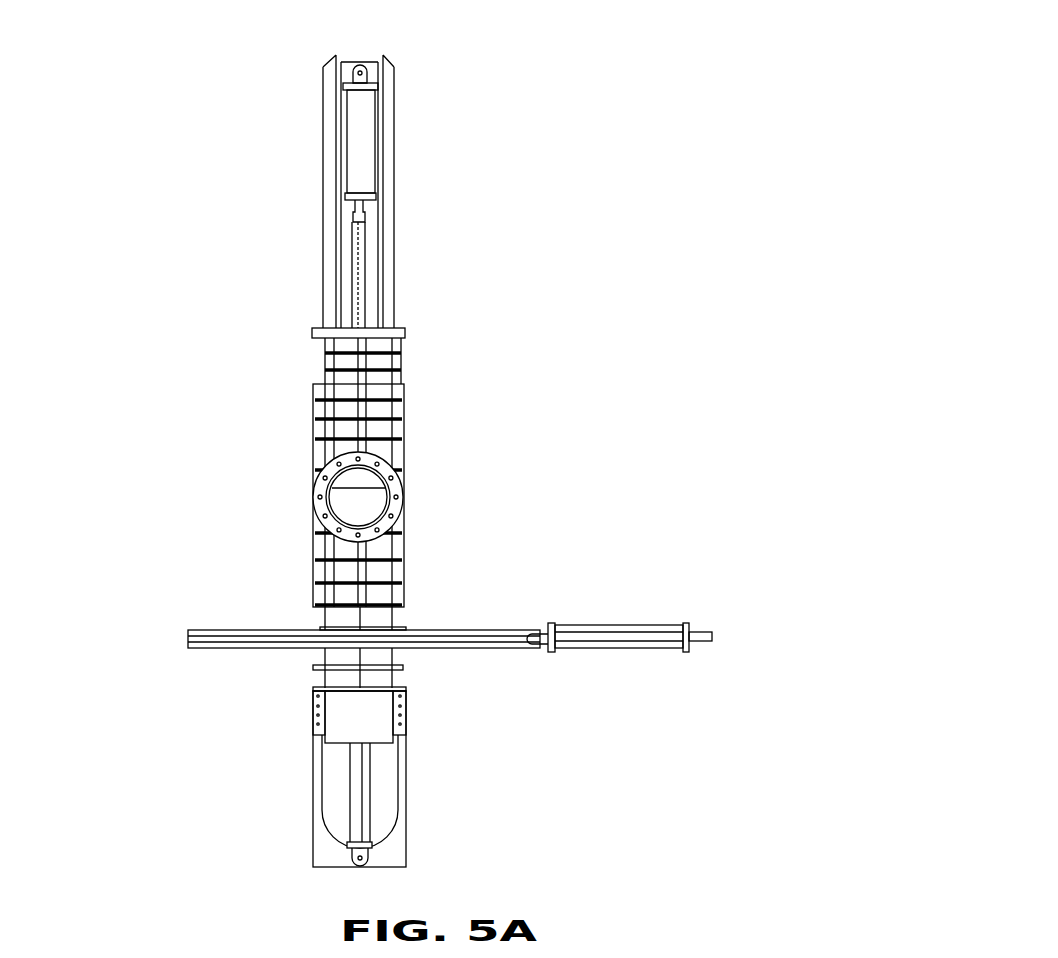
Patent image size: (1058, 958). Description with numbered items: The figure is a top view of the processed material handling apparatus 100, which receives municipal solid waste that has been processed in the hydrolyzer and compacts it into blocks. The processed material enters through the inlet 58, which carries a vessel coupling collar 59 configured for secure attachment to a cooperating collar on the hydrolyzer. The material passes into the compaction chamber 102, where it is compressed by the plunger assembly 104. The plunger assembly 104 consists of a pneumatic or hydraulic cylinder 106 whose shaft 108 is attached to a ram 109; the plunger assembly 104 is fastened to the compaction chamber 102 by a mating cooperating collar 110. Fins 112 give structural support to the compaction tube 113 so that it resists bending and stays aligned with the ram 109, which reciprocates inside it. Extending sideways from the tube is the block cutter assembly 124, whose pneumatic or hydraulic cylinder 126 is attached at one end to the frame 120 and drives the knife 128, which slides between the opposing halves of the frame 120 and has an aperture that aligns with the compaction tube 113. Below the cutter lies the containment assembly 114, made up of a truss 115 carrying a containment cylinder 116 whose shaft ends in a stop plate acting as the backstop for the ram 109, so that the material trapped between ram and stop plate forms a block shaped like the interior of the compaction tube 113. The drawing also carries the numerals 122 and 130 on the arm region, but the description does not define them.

The processed material handling apparatus 100 is at (702, 228).
The compaction chamber 102 is at (405, 393).
The plunger assembly 104 is at (358, 62).
The pneumatic or hydraulic cylinder 106 is at (357, 172).
The shaft 108 is at (359, 258).
The ram 109 is at (362, 483).
The mating cooperating collar 110 is at (312, 332).
The fins 112 is at (313, 370).
The compaction tube 113 is at (383, 347).
The containment assembly 114 is at (377, 842).
The truss 115 is at (333, 868).
The containment cylinder 116 is at (358, 798).
The frame 120 is at (312, 648).
The support plate 122 is at (403, 668).
The block cutter assembly 124 is at (690, 620).
The pneumatic or hydraulic cylinder 126 is at (640, 650).
The knife 128 is at (515, 637).
The cross arm 130 is at (432, 633).
The inlet 58 is at (358, 523).
The vessel coupling collar 59 is at (397, 510).